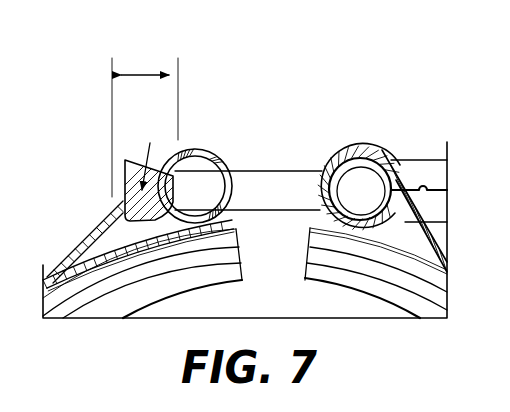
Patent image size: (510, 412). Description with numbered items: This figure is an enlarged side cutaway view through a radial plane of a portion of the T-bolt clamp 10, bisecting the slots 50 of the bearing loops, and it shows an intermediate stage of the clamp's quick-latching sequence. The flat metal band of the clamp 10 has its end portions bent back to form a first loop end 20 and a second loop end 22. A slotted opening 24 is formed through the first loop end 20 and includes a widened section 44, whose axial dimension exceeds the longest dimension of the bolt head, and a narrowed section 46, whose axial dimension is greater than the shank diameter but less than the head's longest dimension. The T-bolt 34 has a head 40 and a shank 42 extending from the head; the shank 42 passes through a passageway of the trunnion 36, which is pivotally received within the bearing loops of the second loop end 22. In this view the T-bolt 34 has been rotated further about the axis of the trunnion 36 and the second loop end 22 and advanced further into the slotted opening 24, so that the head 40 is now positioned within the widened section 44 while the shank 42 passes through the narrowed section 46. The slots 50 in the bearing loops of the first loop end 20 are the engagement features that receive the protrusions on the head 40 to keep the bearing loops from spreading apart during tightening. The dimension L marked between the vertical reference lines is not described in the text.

The T-bolt clamp 10 is at (95, 112).
The first loop end 20 is at (82, 243).
The second loop end 22 is at (348, 152).
The slotted opening 24 is at (106, 190).
The T-bolt 34 is at (261, 165).
The trunnion 36 is at (367, 159).
The head 40 is at (126, 166).
The shank 42 is at (298, 172).
The widened section 44 is at (168, 150).
The narrowed section 46 is at (198, 147).
The slots 50 is at (227, 203).
The length L is at (148, 73).